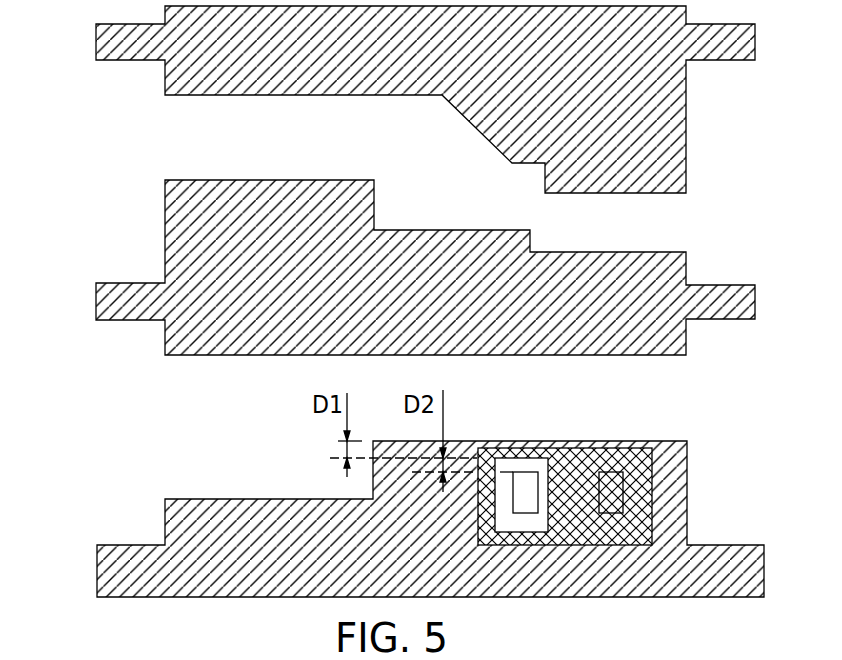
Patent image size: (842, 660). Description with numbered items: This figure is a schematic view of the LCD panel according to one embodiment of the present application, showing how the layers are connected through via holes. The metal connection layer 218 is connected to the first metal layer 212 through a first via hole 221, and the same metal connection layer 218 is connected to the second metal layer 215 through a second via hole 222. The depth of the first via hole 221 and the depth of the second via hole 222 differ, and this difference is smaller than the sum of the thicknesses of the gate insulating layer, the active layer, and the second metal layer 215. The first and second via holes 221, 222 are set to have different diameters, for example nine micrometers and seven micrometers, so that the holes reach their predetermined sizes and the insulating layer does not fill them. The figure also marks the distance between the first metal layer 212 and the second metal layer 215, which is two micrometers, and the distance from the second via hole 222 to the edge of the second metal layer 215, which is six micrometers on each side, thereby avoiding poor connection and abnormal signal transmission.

The first metal layer 212 is at (147, 573).
The second metal layer 215 is at (550, 460).
The metal connection layer 218 is at (638, 460).
The first via hole 221 is at (612, 493).
The second via hole 222 is at (527, 503).